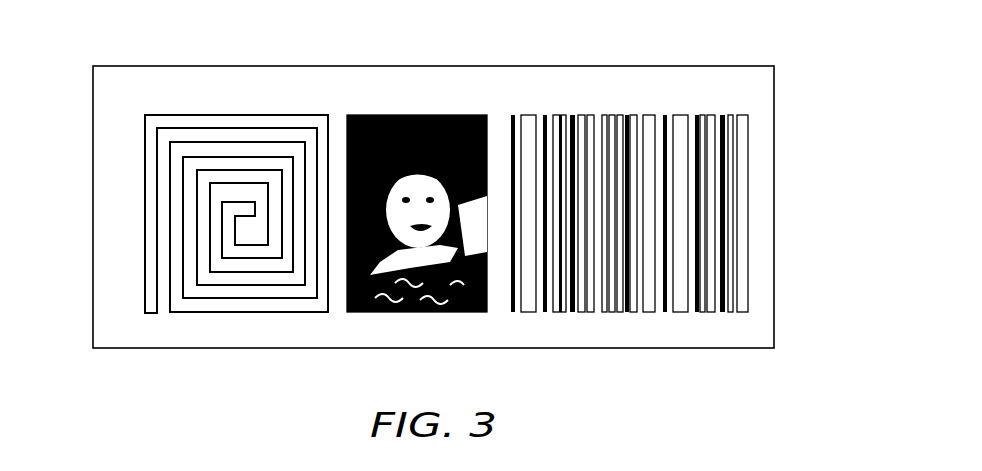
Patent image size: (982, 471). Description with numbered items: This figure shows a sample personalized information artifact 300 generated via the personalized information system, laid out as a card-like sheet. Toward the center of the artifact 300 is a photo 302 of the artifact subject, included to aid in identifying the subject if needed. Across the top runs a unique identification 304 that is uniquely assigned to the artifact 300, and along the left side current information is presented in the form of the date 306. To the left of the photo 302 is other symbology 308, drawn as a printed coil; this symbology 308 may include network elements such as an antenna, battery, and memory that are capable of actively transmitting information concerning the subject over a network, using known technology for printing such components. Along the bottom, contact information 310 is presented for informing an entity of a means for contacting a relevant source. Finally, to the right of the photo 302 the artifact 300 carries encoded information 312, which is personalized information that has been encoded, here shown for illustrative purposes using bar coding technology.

The personalized information artifact 300 is at (647, 66).
The photo 302 is at (503, 100).
The unique identification 304 is at (150, 91).
The date 306 is at (103, 195).
The symbology 308 is at (258, 228).
The contact information 310 is at (762, 325).
The encoded information 312 is at (743, 103).